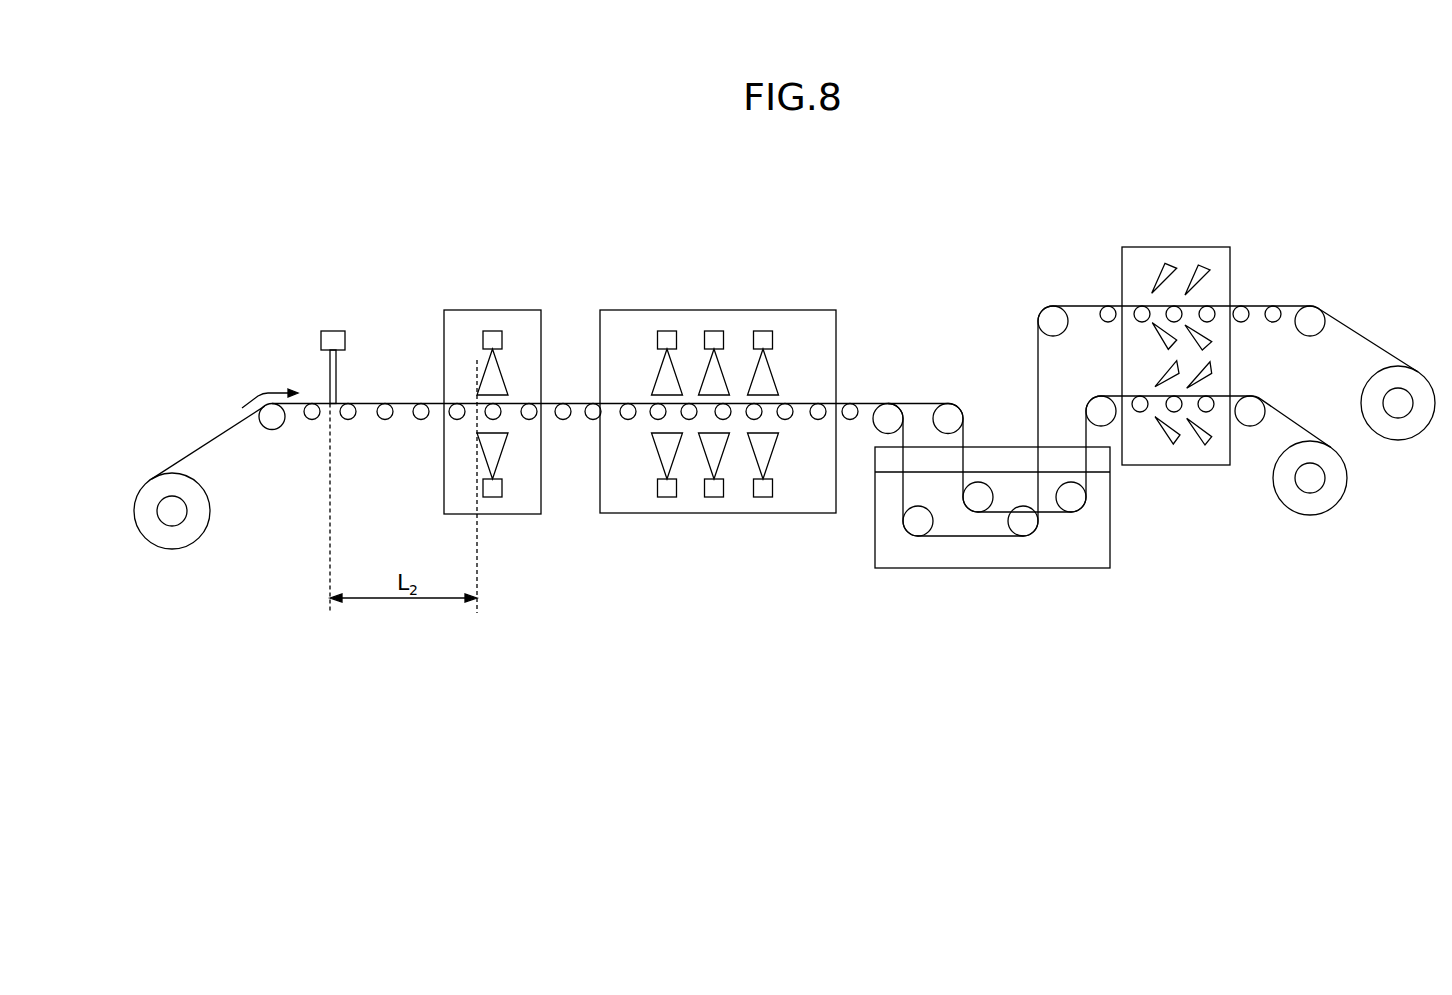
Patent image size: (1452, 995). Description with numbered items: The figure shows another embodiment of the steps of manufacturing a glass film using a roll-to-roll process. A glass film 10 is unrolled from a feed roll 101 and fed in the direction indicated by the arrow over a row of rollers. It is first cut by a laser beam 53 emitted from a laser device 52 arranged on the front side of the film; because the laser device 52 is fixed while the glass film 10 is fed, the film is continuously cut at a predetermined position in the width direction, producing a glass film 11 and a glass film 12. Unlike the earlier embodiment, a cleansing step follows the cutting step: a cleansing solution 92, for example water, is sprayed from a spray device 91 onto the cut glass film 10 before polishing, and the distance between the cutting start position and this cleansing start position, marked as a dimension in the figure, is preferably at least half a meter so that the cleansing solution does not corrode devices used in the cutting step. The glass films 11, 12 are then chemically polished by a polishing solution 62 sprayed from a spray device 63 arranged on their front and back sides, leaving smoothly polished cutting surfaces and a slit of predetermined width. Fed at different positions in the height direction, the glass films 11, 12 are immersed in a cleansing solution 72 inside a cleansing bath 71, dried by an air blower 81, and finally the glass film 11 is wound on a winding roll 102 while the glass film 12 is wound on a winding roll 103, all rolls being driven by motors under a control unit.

The glass film 10 is at (198, 443).
The glass film 11 is at (907, 433).
The glass film 12 is at (928, 402).
The laser device 52 is at (329, 329).
The laser beam 53 is at (337, 370).
The polishing solution 62 is at (719, 373).
The spray device 63 is at (710, 330).
The cleansing bath 71 is at (875, 460).
The cleansing solution 72 is at (937, 550).
The air blower 81 is at (1175, 267).
The spray device 91 is at (490, 328).
The cleansing solution 92 is at (502, 370).
The feed roll 101 is at (173, 523).
The winding roll 102 is at (1398, 412).
The winding roll 103 is at (1312, 485).